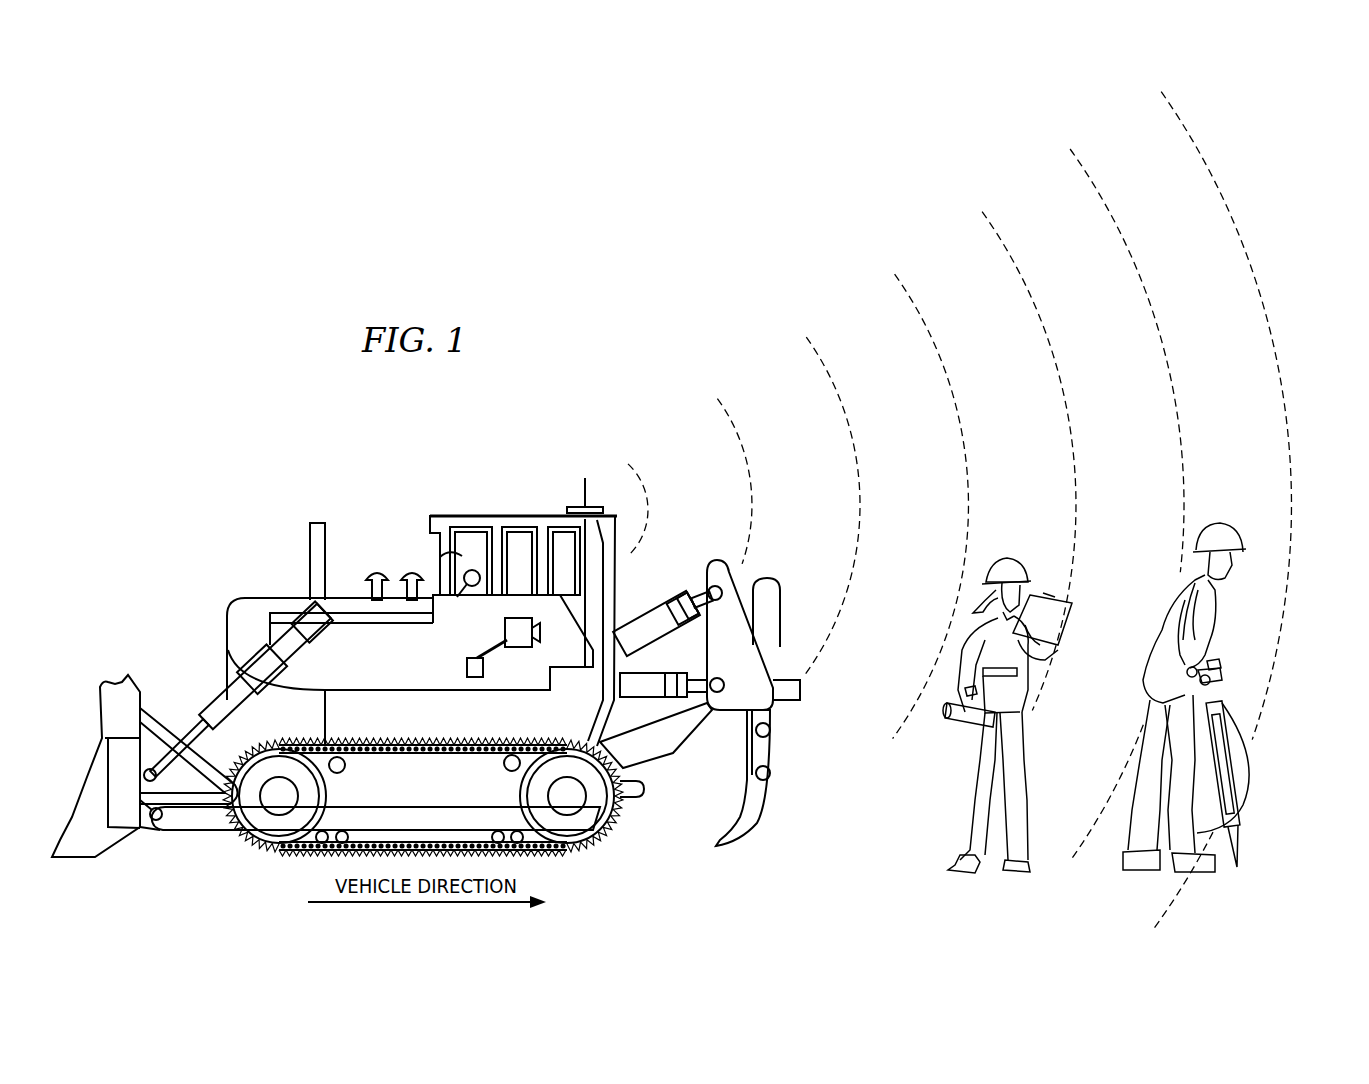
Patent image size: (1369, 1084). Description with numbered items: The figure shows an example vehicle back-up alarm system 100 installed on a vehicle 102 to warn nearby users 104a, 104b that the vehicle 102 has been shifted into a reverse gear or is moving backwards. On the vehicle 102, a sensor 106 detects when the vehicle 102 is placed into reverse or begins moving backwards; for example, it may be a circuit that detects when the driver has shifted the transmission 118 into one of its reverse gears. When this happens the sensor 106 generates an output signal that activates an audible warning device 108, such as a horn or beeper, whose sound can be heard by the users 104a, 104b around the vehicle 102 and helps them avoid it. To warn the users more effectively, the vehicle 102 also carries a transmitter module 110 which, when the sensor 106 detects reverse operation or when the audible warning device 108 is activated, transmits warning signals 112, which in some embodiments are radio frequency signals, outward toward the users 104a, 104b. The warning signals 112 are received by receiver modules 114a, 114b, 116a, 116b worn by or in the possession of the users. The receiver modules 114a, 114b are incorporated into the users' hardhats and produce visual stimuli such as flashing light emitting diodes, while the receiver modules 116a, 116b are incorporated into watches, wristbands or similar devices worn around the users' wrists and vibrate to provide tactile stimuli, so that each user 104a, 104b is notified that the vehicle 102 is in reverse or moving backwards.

The vehicle back-up alarm system 100 is at (454, 414).
The vehicle 102 is at (226, 637).
The user 104a is at (943, 769).
The user 104b is at (1285, 725).
The sensor 106 is at (467, 663).
The audible warning device 108 is at (503, 627).
The transmitter module 110 is at (577, 504).
The warning signals 112 is at (746, 462).
The receiver module 114a is at (1012, 558).
The receiver module 114b is at (1227, 523).
The receiver module 116a is at (967, 690).
The receiver module 116b is at (1218, 664).
The transmission 118 is at (464, 570).